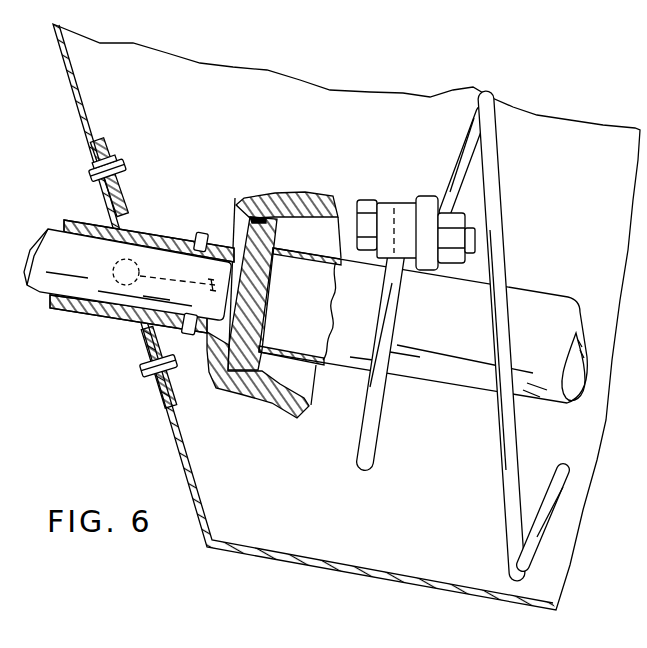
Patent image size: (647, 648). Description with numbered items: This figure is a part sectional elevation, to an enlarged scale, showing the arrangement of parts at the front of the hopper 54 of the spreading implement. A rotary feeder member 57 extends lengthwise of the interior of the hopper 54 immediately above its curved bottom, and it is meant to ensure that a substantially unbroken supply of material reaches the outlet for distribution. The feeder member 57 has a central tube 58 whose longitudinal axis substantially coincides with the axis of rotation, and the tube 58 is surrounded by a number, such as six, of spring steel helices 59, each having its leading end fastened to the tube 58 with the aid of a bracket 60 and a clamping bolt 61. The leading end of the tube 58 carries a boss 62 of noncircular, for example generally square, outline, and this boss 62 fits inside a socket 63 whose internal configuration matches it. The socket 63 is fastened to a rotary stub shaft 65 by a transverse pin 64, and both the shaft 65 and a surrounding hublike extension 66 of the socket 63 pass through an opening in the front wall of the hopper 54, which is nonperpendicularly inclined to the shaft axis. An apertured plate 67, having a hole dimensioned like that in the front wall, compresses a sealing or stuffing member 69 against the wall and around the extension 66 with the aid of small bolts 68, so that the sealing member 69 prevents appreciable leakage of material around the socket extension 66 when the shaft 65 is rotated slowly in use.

The hopper 54 is at (346, 100).
The rotary feeder member 57 is at (480, 394).
The central tube 58 is at (537, 297).
The spring steel helices 59 is at (490, 152).
The bracket 60 is at (417, 205).
The clamping bolt 61 is at (365, 200).
The boss 62 is at (252, 288).
The socket 63 is at (248, 203).
The transverse pin 64 is at (205, 233).
The rotary stub shaft 65 is at (53, 228).
The hublike extension 66 is at (158, 237).
The apertured plate 67 is at (116, 160).
The small bolts 68 is at (128, 170).
The sealing or stuffing member 69 is at (100, 140).